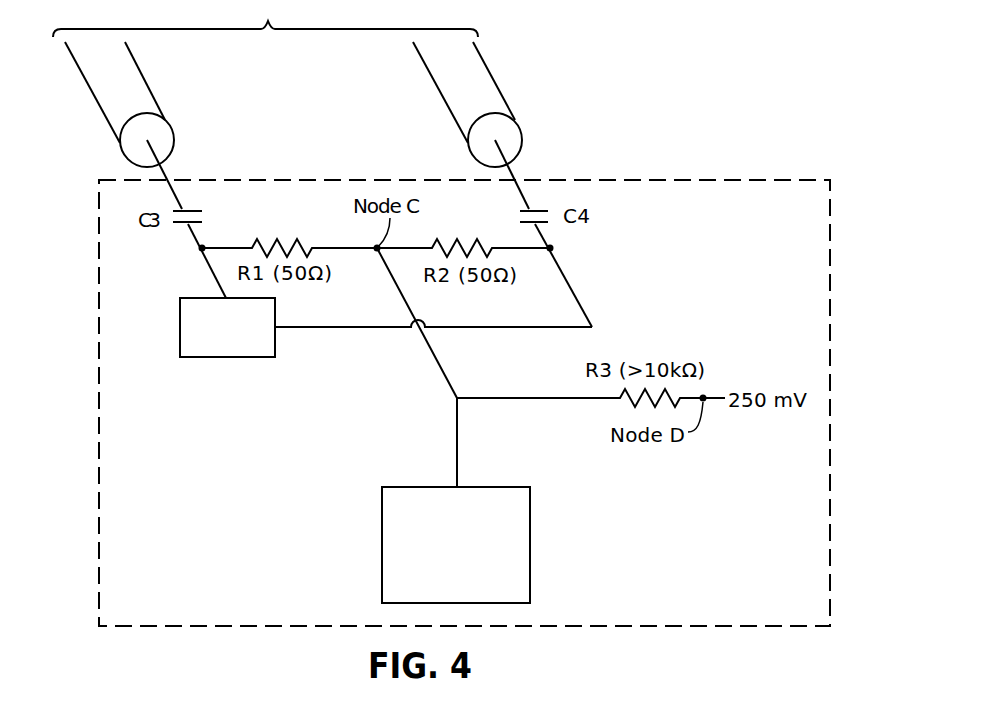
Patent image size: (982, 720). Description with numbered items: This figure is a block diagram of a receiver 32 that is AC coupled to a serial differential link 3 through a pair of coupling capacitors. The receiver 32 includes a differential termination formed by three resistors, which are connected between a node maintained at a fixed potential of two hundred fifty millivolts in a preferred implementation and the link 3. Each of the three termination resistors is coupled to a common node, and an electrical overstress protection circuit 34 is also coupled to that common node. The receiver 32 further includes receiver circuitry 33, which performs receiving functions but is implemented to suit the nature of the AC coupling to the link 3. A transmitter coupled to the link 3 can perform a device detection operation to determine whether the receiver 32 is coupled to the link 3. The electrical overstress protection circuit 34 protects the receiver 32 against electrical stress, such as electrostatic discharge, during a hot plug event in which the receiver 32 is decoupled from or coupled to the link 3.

The serial differential link 3 is at (208, 29).
The receiver 32 is at (98, 522).
The receiver circuitry 33 is at (180, 333).
The electrical overstress protection circuit 34 is at (530, 537).